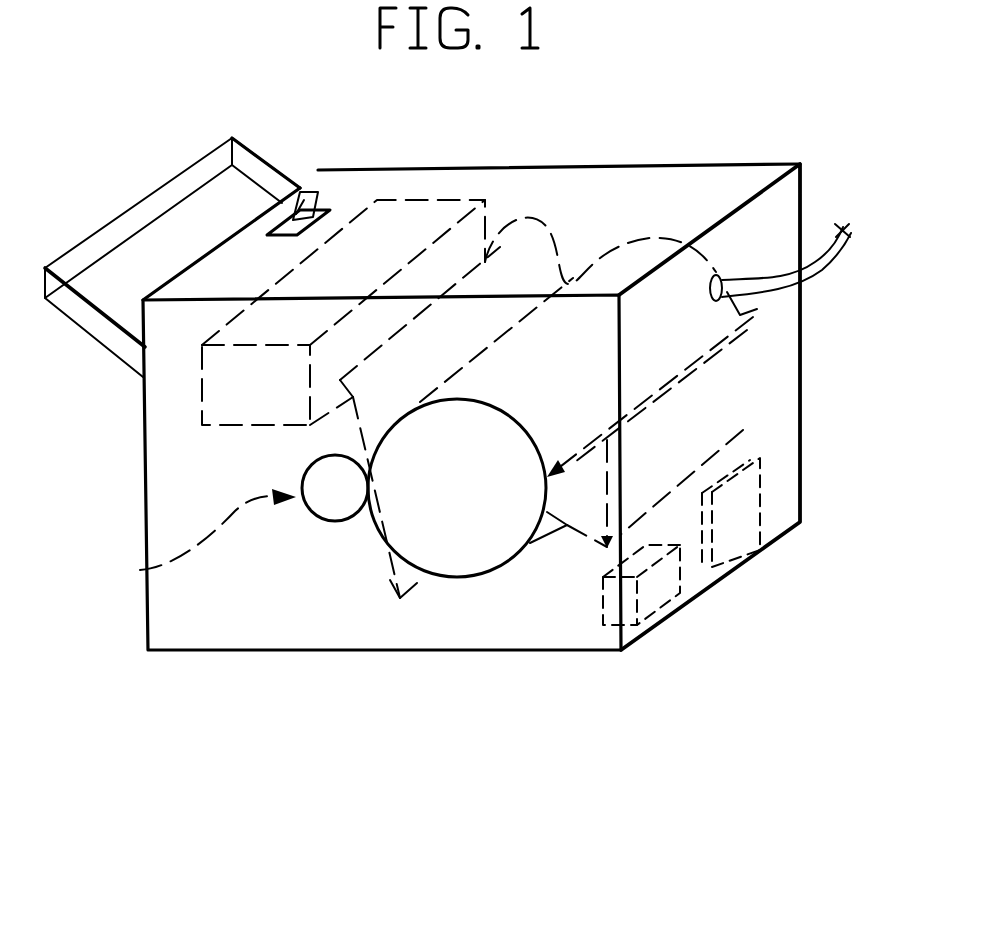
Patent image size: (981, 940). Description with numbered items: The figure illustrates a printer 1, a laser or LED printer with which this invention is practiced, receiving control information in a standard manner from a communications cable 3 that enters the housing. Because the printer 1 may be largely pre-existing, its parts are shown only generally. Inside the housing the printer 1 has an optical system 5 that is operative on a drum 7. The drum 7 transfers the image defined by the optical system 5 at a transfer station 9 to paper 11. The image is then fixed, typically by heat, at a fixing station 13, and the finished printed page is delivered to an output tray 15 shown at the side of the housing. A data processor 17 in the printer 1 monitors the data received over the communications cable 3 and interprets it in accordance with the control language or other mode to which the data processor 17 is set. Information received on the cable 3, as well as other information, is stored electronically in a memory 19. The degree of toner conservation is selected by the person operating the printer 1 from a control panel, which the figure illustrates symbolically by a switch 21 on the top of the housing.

The printer 1 is at (168, 702).
The communications cable 3 is at (750, 305).
The optical system 5 is at (743, 430).
The drum 7 is at (487, 577).
The transfer station 9 is at (139, 570).
The paper 11 is at (390, 572).
The fixing station 13 is at (202, 392).
The output tray 15 is at (43, 296).
The data processor 17 is at (670, 583).
The memory 19 is at (743, 522).
The switch 21 is at (297, 190).